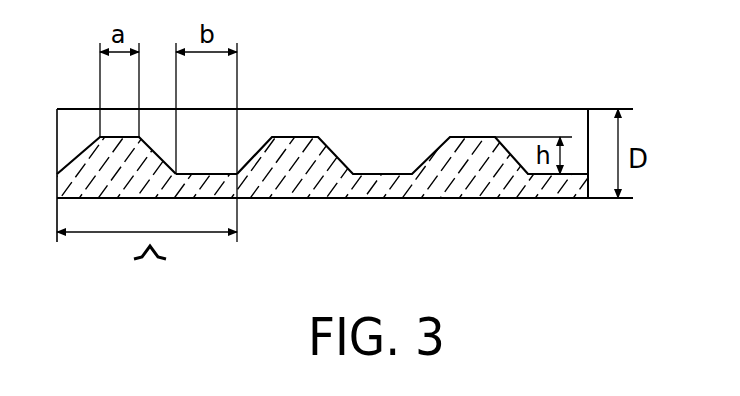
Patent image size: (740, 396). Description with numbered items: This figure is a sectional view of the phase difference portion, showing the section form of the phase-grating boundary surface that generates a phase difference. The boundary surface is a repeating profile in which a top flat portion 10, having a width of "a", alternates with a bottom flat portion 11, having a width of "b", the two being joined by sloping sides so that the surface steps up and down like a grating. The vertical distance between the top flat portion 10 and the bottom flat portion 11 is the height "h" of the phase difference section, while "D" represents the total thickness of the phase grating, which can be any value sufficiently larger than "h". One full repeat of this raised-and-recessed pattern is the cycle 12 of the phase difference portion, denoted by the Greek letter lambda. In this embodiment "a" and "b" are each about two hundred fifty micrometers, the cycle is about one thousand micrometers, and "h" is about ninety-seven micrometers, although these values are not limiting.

The top flat portion 10 is at (122, 137).
The bottom flat portion 11 is at (212, 174).
The cycle of the phase difference portion 12 is at (185, 240).